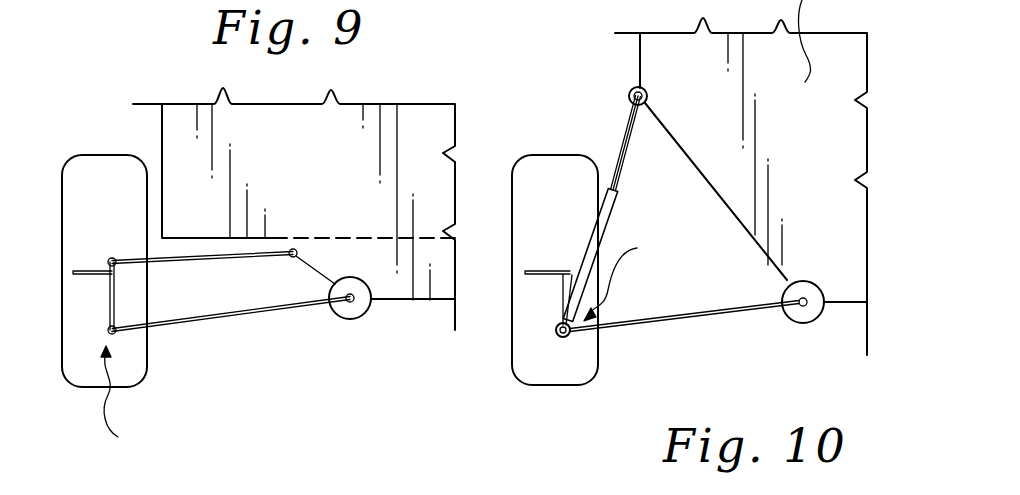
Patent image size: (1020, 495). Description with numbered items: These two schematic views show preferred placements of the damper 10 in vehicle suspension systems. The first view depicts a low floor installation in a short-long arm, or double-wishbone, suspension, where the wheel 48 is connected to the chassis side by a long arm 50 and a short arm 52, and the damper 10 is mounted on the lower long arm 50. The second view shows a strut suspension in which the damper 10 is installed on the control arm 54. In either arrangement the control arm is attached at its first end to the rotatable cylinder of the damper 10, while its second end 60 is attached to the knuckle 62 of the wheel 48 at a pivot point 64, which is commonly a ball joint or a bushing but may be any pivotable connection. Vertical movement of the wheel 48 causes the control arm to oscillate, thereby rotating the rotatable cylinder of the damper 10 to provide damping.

In FIG. 9, the damper 10 is at (352, 322).
In FIG. 10, the damper 10 is at (815, 320).
In FIG. 9, the wheel 48 is at (78, 358).
In FIG. 10, the wheel 48 is at (567, 370).
In FIG. 9, the long arm 50 is at (264, 313).
In FIG. 9, the short arm 52 is at (226, 259).
In FIG. 10, the control arm 54 is at (728, 316).
In FIG. 9, the second end 60 is at (124, 400).
In FIG. 10, the second end 60 is at (626, 279).
In FIG. 9, the knuckle 62 is at (115, 297).
In FIG. 10, the knuckle 62 is at (522, 280).
In FIG. 9, the pivot point 64 is at (116, 338).
In FIG. 10, the pivot point 64 is at (560, 337).